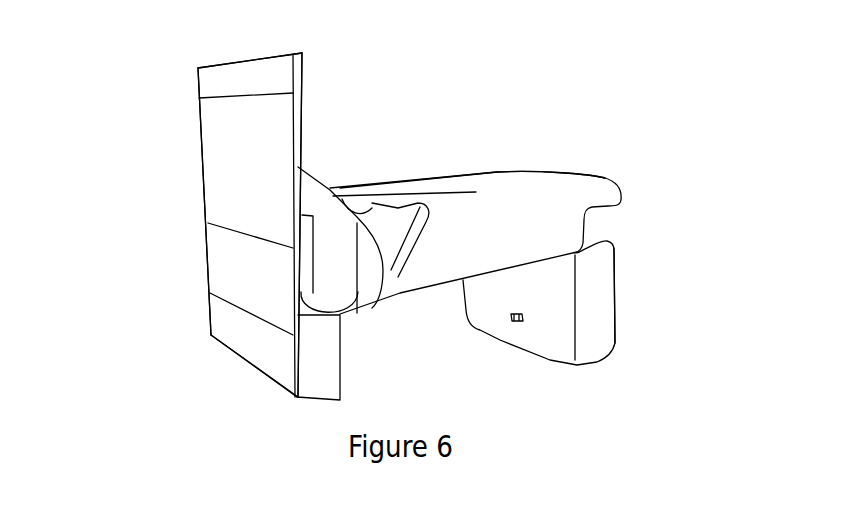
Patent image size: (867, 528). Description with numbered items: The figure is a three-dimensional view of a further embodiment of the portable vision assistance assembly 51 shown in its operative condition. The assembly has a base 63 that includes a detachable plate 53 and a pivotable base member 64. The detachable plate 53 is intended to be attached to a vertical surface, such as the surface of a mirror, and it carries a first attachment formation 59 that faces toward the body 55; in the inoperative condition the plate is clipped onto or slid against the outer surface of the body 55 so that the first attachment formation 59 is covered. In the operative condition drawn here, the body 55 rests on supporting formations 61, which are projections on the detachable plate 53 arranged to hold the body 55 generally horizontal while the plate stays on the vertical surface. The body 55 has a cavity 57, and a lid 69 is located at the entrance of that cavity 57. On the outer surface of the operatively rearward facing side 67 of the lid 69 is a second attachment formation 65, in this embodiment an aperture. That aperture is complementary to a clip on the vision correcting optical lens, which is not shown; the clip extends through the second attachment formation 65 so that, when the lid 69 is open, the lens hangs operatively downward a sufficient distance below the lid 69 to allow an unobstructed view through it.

The portable vision assistance assembly 51 is at (163, 75).
The detachable plate 53 is at (254, 80).
The body 55 is at (497, 162).
The cavity 57 is at (492, 215).
The first attachment formation 59 is at (233, 307).
The supporting formations 61 is at (322, 358).
The base 63 is at (320, 137).
The pivotable base member 64 is at (342, 287).
The second attachment formation 65 is at (518, 322).
The operatively rearward facing side 67 is at (558, 330).
The lid 69 is at (597, 295).